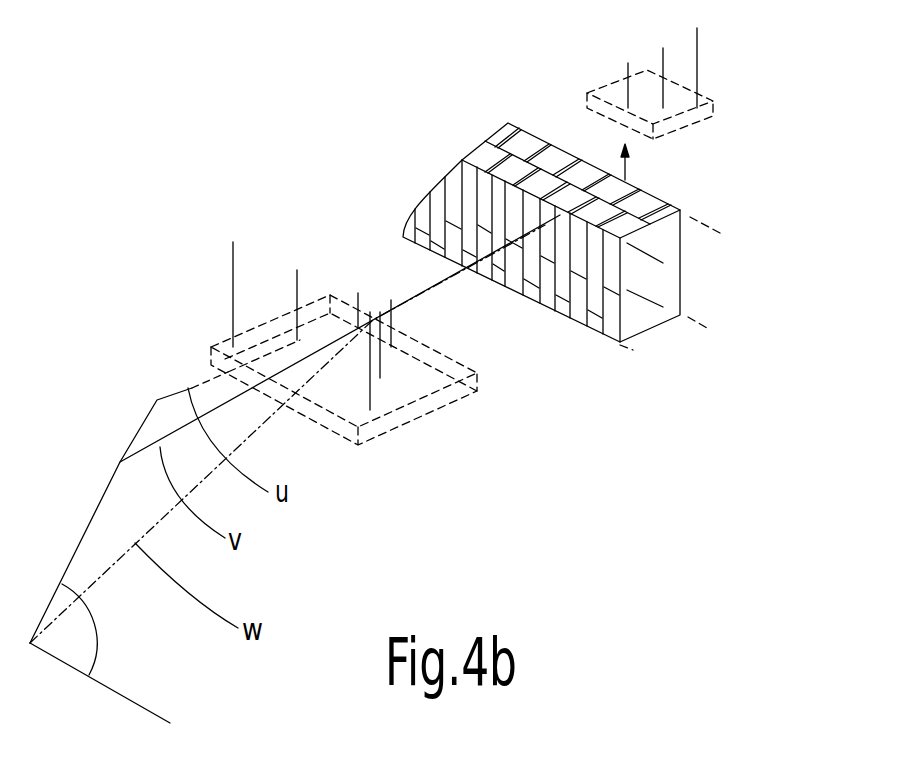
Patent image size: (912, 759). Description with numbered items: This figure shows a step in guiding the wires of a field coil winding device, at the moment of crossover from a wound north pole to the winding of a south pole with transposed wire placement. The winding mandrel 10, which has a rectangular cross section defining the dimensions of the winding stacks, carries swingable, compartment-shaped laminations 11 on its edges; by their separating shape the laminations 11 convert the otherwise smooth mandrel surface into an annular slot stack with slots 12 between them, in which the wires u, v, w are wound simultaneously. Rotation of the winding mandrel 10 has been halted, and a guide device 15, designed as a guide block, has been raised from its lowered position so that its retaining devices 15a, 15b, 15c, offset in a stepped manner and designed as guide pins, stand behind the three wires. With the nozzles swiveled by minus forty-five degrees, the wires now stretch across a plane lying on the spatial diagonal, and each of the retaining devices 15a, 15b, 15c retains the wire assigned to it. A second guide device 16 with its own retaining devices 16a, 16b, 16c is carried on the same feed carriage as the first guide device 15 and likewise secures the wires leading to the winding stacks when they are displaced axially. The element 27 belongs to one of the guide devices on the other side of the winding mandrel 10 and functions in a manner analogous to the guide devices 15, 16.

The winding mandrel 10 is at (653, 282).
The laminations 11 is at (678, 205).
The slots 12 is at (660, 212).
The element of guide device 27 is at (683, 123).
The guide device 15 is at (392, 400).
The retaining device 15a is at (372, 382).
The retaining device 15b is at (380, 355).
The retaining device 15c is at (392, 320).
The second guide device 16 is at (210, 357).
The retaining device 16a is at (230, 302).
The retaining device 16b is at (297, 285).
The retaining device 16c is at (358, 295).